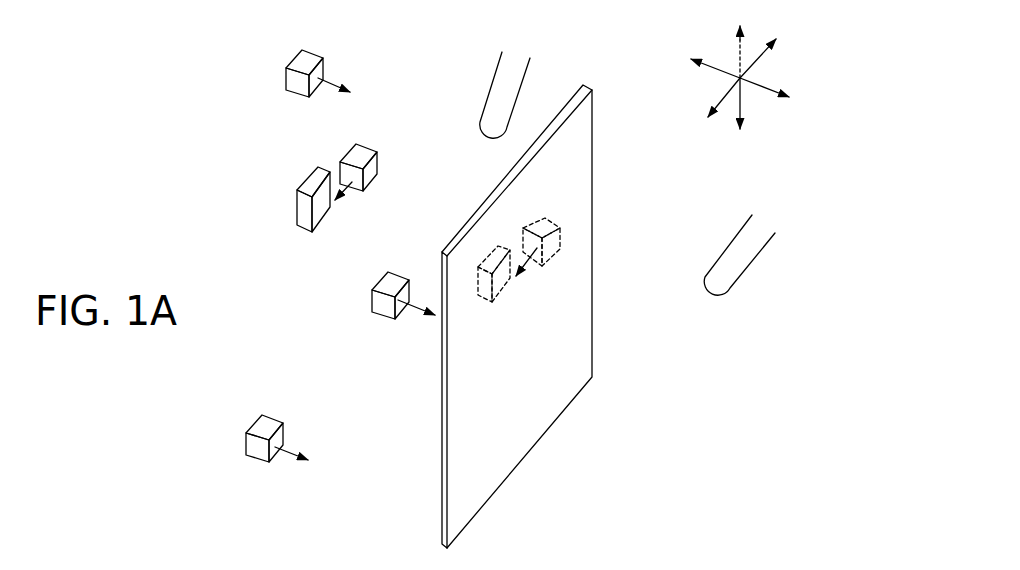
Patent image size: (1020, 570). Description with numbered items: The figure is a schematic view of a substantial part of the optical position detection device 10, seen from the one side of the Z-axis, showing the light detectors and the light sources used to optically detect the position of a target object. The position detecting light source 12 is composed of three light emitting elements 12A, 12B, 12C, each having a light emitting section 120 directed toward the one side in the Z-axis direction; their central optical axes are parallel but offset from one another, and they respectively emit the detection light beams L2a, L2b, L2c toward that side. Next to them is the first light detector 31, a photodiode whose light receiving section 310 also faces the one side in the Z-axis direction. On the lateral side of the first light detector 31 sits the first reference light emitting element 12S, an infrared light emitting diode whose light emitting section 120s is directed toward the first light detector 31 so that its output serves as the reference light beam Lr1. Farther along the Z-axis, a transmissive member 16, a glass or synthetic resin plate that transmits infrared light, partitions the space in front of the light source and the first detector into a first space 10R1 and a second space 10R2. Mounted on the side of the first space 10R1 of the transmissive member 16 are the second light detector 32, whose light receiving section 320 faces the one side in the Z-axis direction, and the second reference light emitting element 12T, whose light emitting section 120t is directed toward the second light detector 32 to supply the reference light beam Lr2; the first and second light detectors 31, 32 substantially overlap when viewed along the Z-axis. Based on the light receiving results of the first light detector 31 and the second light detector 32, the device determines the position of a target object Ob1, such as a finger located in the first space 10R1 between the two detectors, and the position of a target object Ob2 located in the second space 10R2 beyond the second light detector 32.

The optical position detection device 10 is at (213, 211).
The position detecting light source 12 is at (318, 272).
The light emitting element 12A is at (323, 66).
The light emitting element 12B is at (277, 455).
The light emitting element 12C is at (383, 317).
The first reference light emitting element 12S is at (374, 172).
The second reference light emitting element 12T is at (556, 242).
The light emitting section 120 is at (313, 61).
The light emitting section 120s is at (363, 187).
The light emitting section 120t is at (552, 226).
The transmissive member 16 is at (440, 483).
The first light detector 31 is at (297, 226).
The light receiving section 310 is at (320, 207).
The second light detector 32 is at (498, 305).
The light receiving section 320 is at (506, 288).
The first space 10R1 is at (427, 473).
The second space 10R2 is at (607, 470).
The detection light beam L2a is at (328, 85).
The detection light beam L2b is at (291, 445).
The detection light beam L2c is at (421, 305).
The reference light beam Lr1 is at (354, 186).
The reference light beam Lr2 is at (512, 245).
The target object Ob1 is at (481, 102).
The target object Ob2 is at (735, 289).